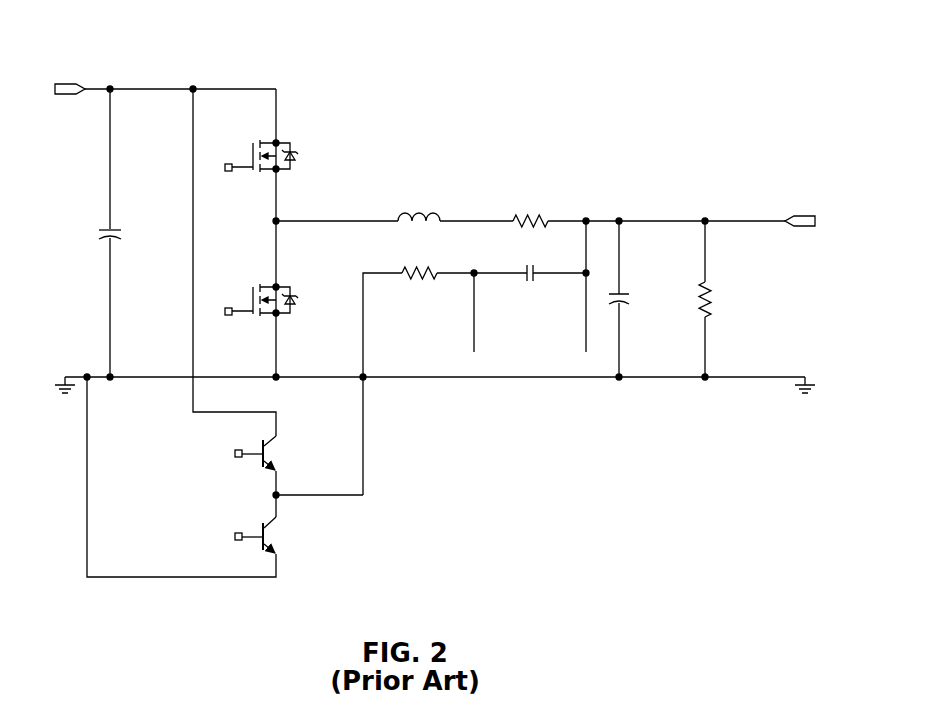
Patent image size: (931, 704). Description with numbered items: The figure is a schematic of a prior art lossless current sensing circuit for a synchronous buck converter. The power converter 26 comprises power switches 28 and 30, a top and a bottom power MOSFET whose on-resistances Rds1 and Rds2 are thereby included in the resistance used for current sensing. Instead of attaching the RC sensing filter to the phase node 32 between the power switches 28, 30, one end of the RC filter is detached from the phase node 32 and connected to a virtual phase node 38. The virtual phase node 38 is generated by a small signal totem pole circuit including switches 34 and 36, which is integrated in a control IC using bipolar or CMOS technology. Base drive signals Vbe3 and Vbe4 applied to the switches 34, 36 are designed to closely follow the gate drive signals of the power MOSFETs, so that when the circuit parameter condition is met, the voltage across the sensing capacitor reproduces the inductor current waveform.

The power converter 26 is at (127, 49).
The power switch 28 is at (287, 143).
The power switch 30 is at (287, 287).
The phase node 32 is at (274, 223).
The switch 34 is at (271, 450).
The switch 36 is at (271, 532).
The virtual phase node 38 is at (274, 497).